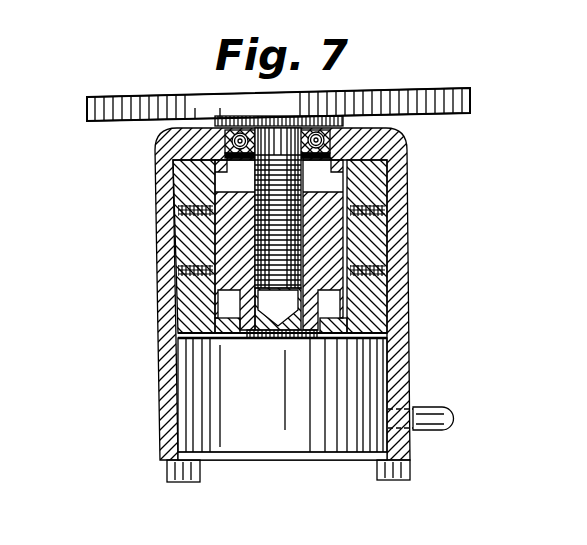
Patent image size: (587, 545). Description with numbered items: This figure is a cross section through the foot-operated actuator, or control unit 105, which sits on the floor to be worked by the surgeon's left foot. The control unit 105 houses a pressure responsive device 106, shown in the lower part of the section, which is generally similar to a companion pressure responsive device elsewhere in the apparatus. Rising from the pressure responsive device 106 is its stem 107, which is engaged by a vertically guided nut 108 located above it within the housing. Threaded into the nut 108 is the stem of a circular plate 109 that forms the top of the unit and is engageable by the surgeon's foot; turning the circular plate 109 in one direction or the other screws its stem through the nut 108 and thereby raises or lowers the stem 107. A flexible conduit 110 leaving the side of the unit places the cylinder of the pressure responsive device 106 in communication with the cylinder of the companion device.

The actuator 105 is at (153, 322).
The pressure responsive device 106 is at (276, 438).
The stem 107 is at (250, 328).
The vertically guided nut 108 is at (337, 246).
The circular plate 109 is at (442, 113).
The flexible conduit 110 is at (444, 408).